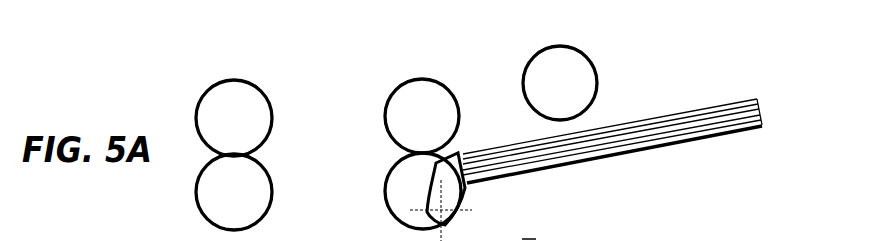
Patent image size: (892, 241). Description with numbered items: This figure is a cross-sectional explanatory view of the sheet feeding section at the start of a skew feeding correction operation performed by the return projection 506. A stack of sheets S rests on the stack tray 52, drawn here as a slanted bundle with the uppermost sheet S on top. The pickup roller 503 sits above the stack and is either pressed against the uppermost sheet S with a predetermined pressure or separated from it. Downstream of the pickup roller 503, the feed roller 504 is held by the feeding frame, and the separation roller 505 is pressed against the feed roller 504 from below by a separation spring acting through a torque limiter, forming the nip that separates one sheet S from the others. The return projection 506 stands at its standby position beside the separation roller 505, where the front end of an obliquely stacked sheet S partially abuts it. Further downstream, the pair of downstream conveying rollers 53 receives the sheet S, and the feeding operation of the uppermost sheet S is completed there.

The pair of downstream conveying rollers 53 is at (202, 81).
The pickup roller 503 is at (577, 62).
The feed roller 504 is at (417, 92).
The separation roller 505 is at (398, 177).
The return projection 506 is at (457, 153).
The sheet S is at (688, 110).
The stack tray 52 is at (748, 132).